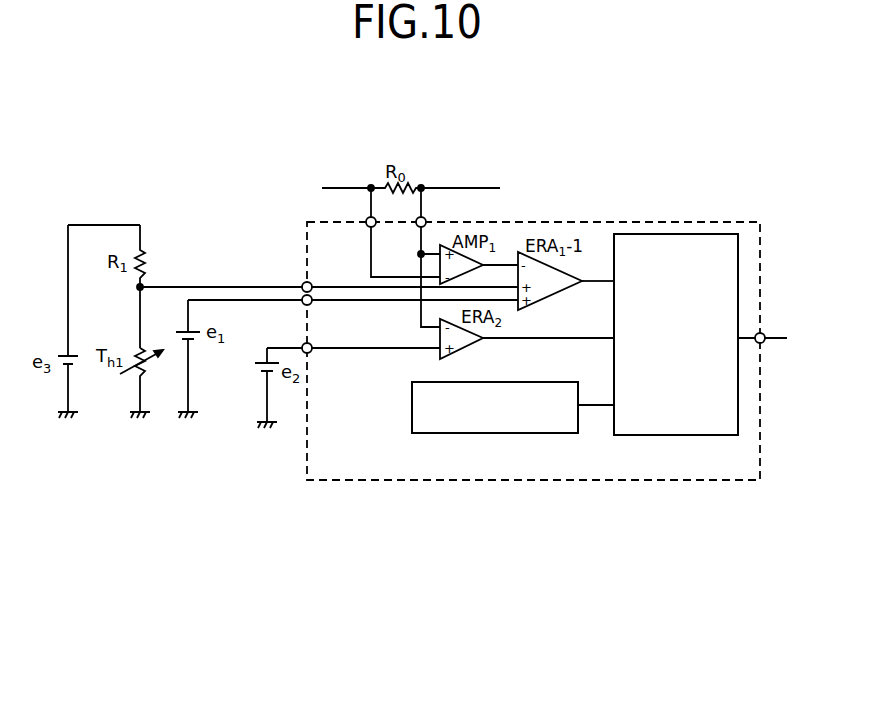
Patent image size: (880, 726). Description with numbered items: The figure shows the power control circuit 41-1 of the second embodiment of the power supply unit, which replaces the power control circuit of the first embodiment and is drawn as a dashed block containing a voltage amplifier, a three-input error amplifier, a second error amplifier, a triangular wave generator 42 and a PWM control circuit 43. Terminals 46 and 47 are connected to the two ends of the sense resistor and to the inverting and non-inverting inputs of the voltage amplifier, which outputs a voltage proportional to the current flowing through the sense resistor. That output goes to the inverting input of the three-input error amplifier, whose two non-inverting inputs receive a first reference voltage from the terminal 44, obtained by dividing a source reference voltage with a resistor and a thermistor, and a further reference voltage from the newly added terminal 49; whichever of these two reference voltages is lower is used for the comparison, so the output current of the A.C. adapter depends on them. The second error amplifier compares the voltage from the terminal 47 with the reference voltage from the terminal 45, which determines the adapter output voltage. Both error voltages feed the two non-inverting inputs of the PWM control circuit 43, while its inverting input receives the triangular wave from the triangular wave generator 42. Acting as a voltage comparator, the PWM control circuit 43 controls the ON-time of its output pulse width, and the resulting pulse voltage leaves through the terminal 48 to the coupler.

The power control circuit 41-1 is at (679, 216).
The triangular wave generator 42 is at (538, 434).
The PWM control circuit 43 is at (703, 436).
The terminal 44 is at (302, 283).
The terminal 45 is at (310, 353).
The terminal 46 is at (367, 216).
The terminal 47 is at (426, 216).
The terminal 48 is at (761, 333).
The terminal 49 is at (310, 305).